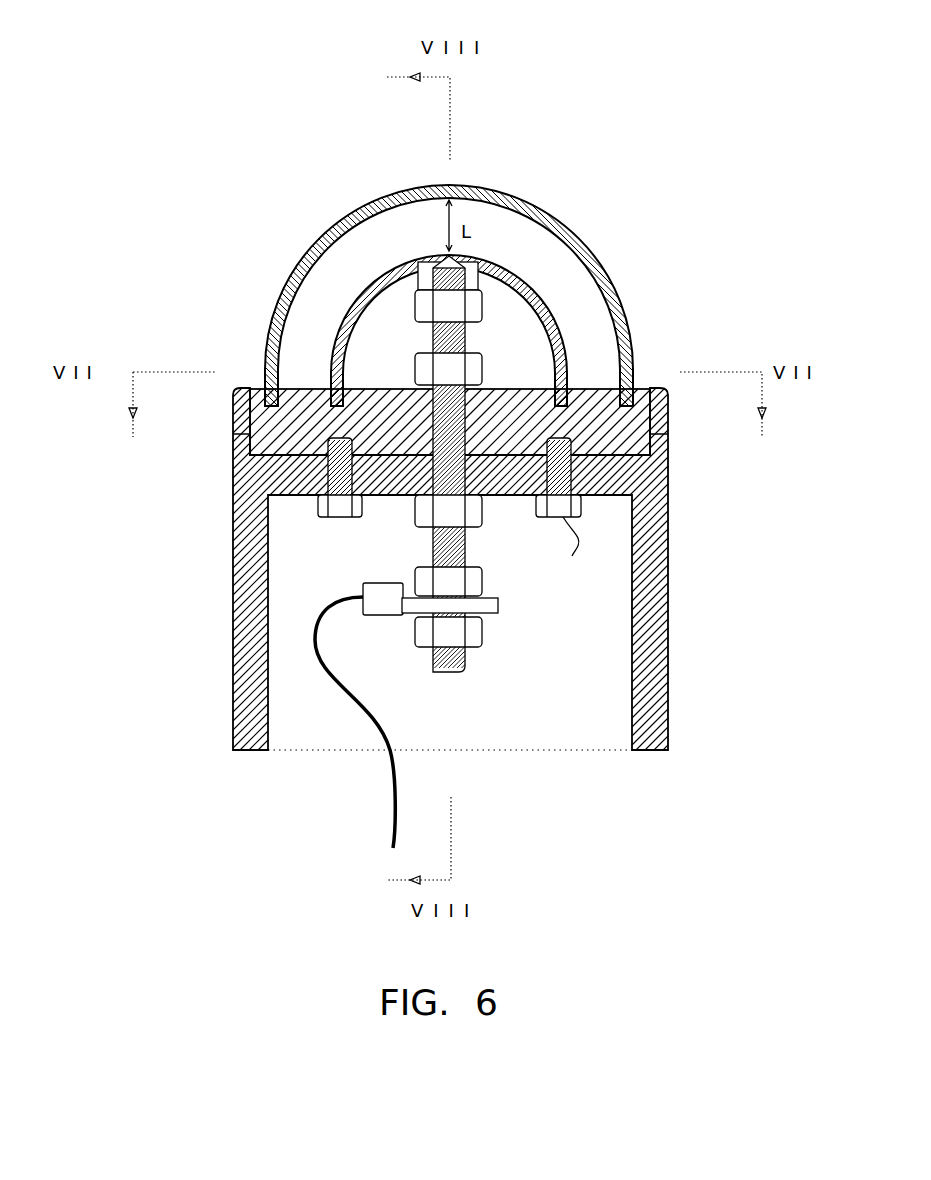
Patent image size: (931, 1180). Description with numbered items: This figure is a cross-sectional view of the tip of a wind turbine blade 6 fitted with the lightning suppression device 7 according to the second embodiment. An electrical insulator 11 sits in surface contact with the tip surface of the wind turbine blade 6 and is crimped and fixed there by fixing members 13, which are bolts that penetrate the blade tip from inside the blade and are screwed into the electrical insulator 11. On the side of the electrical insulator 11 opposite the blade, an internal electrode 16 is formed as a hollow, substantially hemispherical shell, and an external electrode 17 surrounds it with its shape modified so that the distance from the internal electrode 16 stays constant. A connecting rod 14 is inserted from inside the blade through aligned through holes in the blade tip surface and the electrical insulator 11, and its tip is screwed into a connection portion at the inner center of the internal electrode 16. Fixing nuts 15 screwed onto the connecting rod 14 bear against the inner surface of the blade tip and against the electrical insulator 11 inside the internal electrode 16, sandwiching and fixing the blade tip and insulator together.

The wind turbine blade 6 is at (668, 607).
The lightning suppression device 7 is at (421, 281).
The electrical insulator 11 is at (233, 420).
The fixing member 13 is at (340, 517).
The connecting rod 14 is at (445, 675).
The fixing nut 15 is at (483, 512).
The internal electrode 16 is at (367, 290).
The external electrode 17 is at (281, 294).